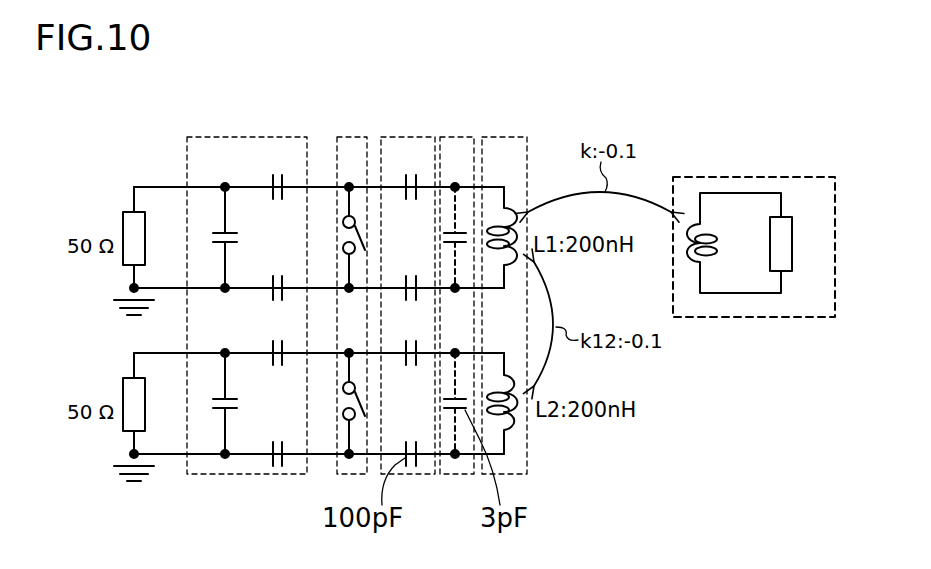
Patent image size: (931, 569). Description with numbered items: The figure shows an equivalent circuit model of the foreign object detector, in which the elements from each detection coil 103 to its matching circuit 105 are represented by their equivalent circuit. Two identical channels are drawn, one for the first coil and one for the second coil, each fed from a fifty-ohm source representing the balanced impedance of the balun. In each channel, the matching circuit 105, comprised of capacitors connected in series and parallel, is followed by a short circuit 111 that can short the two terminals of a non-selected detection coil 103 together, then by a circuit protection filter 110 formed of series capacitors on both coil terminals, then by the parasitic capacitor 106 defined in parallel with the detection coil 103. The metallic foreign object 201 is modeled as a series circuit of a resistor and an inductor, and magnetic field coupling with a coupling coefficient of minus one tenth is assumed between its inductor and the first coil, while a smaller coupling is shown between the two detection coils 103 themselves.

The detection coil 103 is at (503, 137).
The matching circuit 105 is at (245, 137).
The parasitic capacitor 106 is at (453, 137).
The circuit protection filter 110 is at (408, 137).
The short circuit 111 is at (348, 137).
The metallic foreign object 201 is at (750, 177).